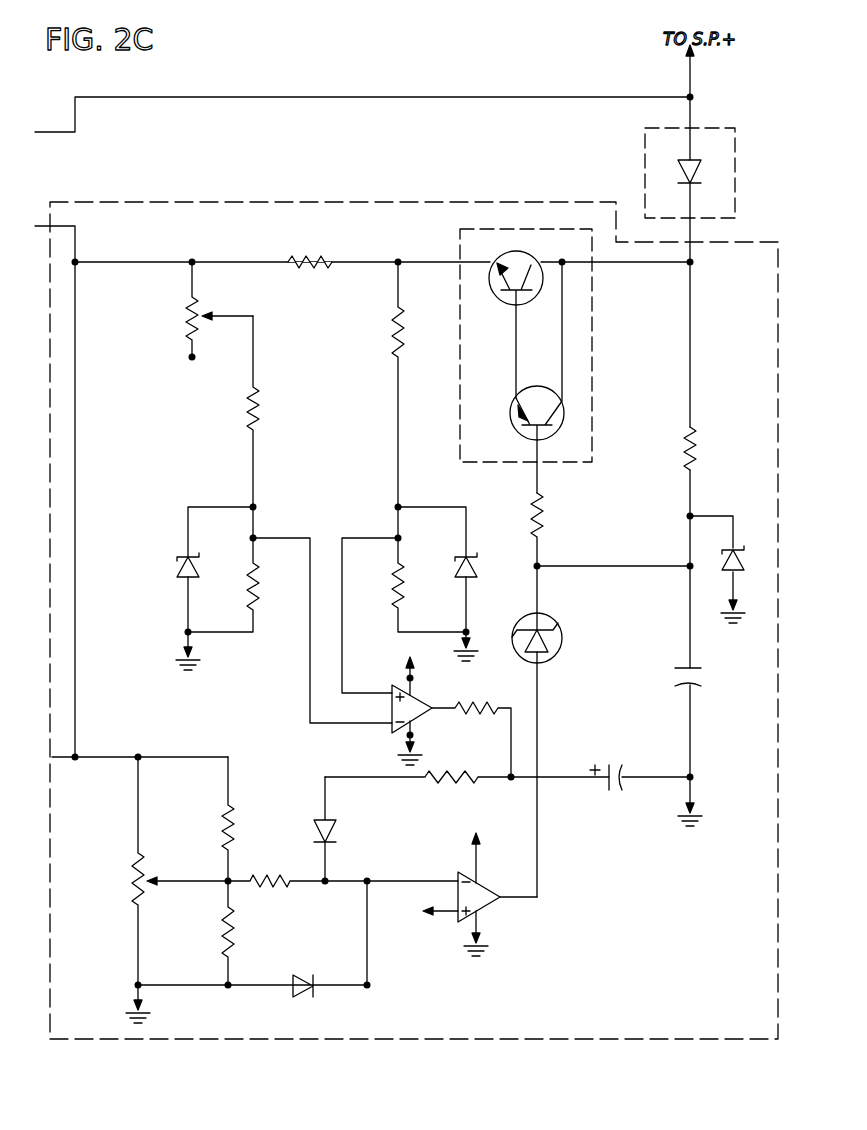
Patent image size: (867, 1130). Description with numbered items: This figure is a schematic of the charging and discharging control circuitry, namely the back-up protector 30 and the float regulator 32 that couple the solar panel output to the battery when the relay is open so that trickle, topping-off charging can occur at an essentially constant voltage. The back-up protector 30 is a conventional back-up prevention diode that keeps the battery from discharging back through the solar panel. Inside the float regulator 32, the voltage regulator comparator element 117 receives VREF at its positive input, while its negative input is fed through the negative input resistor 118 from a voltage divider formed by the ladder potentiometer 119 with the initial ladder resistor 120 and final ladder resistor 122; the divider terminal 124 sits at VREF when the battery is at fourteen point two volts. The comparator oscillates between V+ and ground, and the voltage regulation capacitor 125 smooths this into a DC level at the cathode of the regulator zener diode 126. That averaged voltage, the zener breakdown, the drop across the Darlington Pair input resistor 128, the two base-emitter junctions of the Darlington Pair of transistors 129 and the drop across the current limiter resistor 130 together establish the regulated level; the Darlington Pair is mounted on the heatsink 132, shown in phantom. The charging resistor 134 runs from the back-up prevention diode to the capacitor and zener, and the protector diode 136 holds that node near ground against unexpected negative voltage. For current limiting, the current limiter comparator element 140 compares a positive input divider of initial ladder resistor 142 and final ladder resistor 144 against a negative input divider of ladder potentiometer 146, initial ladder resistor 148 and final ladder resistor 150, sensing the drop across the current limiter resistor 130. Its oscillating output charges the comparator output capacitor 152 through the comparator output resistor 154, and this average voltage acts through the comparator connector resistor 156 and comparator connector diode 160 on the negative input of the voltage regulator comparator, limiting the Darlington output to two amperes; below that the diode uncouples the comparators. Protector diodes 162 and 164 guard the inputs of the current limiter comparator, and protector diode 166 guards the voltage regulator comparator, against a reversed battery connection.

The back-up protector 30 is at (745, 109).
The float regulator 32 is at (450, 1040).
The voltage regulator comparator element 117 is at (480, 908).
The negative input resistor 118 is at (268, 884).
The ladder potentiometer 119 is at (135, 881).
The initial ladder resistor 120 is at (238, 827).
The final ladder resistor 122 is at (225, 930).
The divider terminal 124 is at (233, 878).
The voltage regulation capacitor 125 is at (681, 678).
The regulator zener diode 126 is at (561, 640).
The Darlington Pair input resistor 128 is at (551, 518).
The Darlington Pair of transistors 129 is at (520, 411).
The current limiter resistor 130 is at (305, 258).
The heatsink 132 is at (593, 331).
The charging resistor 134 is at (693, 434).
The protector diode 136 is at (743, 557).
The current limiter comparator element 140 is at (395, 735).
The initial ladder resistor 142 is at (395, 332).
The final ladder resistor 144 is at (393, 587).
The ladder potentiometer 146 is at (186, 312).
The initial ladder resistor 148 is at (245, 405).
The final ladder resistor 150 is at (256, 590).
The comparator output capacitor 152 is at (618, 786).
The comparator output resistor 154 is at (500, 694).
The comparator connector resistor 156 is at (450, 780).
The comparator connector diode 160 is at (338, 830).
The protector diode 162 is at (457, 566).
The protector diode 164 is at (178, 566).
The protector diode 166 is at (305, 992).